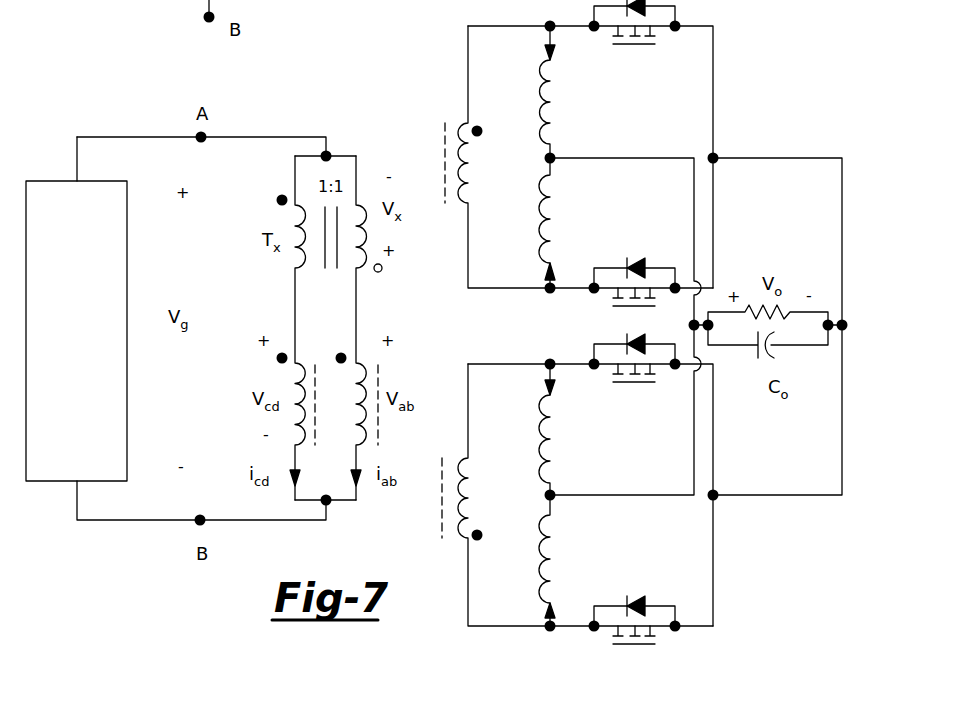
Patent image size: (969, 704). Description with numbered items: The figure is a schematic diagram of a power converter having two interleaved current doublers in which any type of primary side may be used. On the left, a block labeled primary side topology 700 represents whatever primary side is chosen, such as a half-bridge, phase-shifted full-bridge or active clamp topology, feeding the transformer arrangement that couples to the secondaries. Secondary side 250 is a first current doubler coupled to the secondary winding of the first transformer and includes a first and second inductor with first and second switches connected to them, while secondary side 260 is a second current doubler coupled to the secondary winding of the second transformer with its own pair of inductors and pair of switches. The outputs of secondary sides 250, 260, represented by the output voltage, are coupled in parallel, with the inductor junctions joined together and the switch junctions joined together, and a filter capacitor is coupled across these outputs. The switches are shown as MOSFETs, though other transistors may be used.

The primary side topology 700 is at (80, 433).
The secondary side 250 is at (749, 76).
The secondary side 260 is at (766, 553).